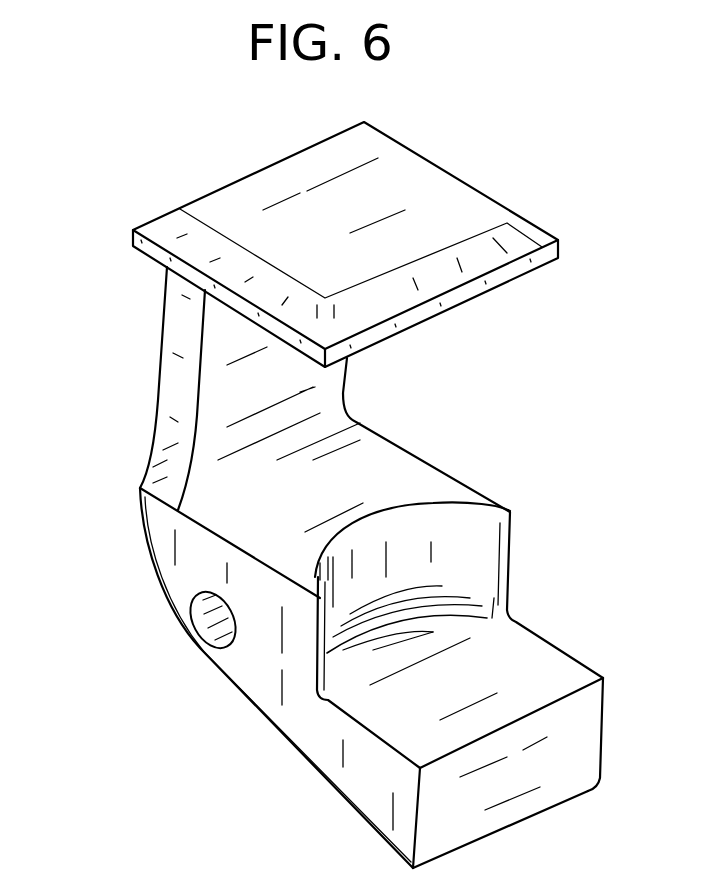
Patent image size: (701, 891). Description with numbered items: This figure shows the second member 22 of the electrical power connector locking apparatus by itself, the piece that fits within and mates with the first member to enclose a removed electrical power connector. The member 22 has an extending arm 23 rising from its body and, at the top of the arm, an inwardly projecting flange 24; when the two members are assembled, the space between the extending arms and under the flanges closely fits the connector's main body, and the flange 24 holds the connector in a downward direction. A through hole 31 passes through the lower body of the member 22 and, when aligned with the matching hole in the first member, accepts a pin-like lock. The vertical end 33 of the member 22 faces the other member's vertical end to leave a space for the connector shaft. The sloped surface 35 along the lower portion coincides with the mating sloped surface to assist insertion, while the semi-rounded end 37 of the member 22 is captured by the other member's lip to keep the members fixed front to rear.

The second member 22 is at (97, 251).
The extending arm 23 is at (172, 389).
The inwardly projecting flange 24 is at (383, 172).
The through hole 31 is at (212, 630).
The vertical end 33 is at (484, 812).
The sloped surface 35 is at (298, 757).
The semi-rounded end 37 is at (152, 565).